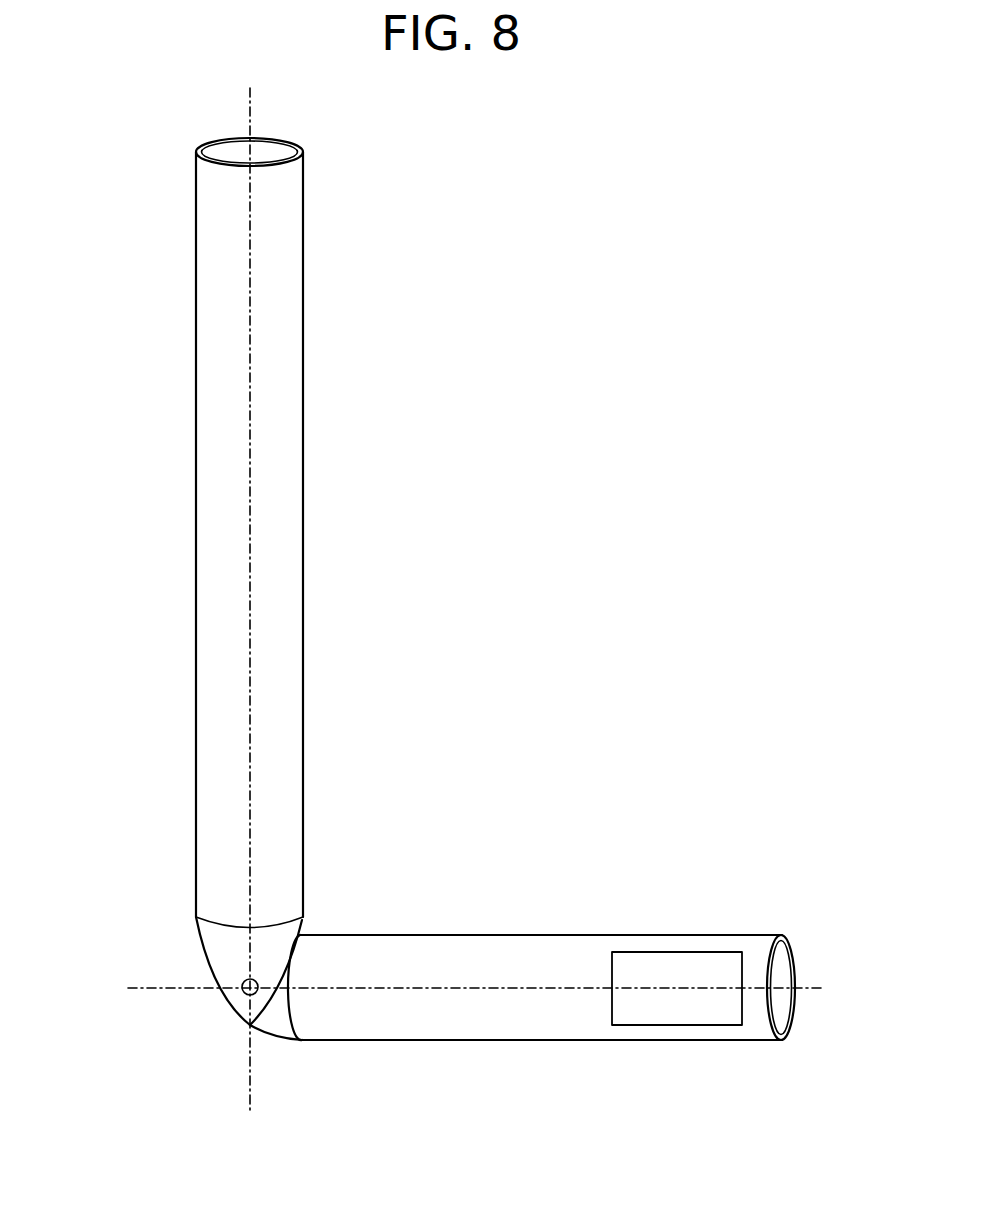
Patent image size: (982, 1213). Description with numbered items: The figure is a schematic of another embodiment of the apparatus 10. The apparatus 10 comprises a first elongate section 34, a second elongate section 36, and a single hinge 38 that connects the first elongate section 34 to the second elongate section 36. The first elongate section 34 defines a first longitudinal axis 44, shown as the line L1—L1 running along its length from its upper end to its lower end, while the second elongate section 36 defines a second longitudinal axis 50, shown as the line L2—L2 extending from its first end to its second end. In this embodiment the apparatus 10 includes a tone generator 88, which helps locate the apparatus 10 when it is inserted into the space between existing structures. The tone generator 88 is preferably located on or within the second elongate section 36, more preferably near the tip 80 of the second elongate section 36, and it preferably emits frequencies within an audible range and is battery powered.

The apparatus 10 is at (566, 230).
The first elongate section 34 is at (303, 560).
The second elongate section 36 is at (503, 935).
The single hinge 38 is at (243, 992).
The first longitudinal axis 44 is at (257, 662).
The second longitudinal axis 50 is at (530, 989).
The tip 80 is at (783, 962).
The tone generator 88 is at (690, 1025).